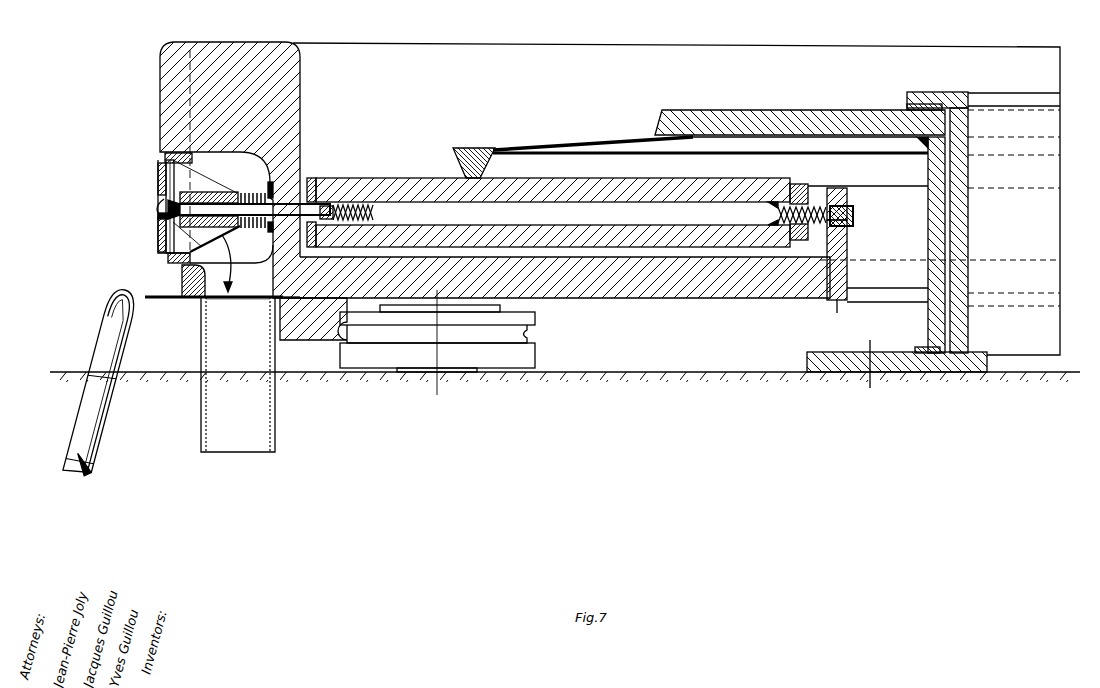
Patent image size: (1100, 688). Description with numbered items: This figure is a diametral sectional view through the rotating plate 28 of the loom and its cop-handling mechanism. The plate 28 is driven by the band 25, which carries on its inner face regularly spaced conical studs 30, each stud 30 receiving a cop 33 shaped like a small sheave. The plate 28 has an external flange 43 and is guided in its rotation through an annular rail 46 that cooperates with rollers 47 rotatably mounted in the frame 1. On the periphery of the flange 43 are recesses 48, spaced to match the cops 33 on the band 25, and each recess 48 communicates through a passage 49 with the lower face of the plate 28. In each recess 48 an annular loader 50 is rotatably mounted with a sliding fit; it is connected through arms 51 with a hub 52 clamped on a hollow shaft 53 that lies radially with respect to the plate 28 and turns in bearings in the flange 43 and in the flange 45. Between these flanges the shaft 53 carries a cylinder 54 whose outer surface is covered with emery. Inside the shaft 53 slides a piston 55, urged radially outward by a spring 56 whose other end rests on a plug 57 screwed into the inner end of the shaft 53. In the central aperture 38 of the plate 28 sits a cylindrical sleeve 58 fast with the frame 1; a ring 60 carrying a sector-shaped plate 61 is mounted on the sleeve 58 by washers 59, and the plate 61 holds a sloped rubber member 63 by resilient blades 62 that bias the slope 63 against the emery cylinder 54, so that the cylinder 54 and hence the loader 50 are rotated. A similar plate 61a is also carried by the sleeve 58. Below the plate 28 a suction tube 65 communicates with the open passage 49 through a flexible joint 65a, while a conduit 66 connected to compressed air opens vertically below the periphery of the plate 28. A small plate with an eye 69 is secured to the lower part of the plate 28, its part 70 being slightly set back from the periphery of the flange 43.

The frame 1 is at (672, 377).
The band 25 is at (158, 188).
The plate 28 is at (722, 293).
The conical studs 30 is at (173, 208).
The cop 33 is at (163, 170).
The aperture 38 is at (1053, 232).
The external flange 43 is at (227, 47).
The flange 45 is at (838, 190).
The annular rail 46 is at (325, 335).
The rollers 47 is at (498, 362).
The recesses 48 is at (235, 158).
The passage 49 is at (220, 288).
The loader 50 is at (173, 261).
The arms 51 is at (222, 235).
The hub 52 is at (205, 193).
The hollow shaft 53 is at (301, 183).
The cylinder 54 is at (420, 182).
The piston 55 is at (158, 217).
The spring 56 is at (360, 202).
The plug 57 is at (847, 227).
The cylindrical sleeve 58 is at (967, 122).
The washers 59 is at (917, 107).
The ring 60 is at (942, 173).
The sector-shaped plate 61 is at (733, 112).
The plate 61a is at (943, 100).
The resilient blades 62 is at (605, 140).
The sloped rubber member 63 is at (497, 150).
The suction tube 65 is at (223, 400).
The flexible joint 65a is at (173, 298).
The conduit 66 is at (90, 453).
The eye 69 is at (168, 298).
The part 70 is at (183, 282).